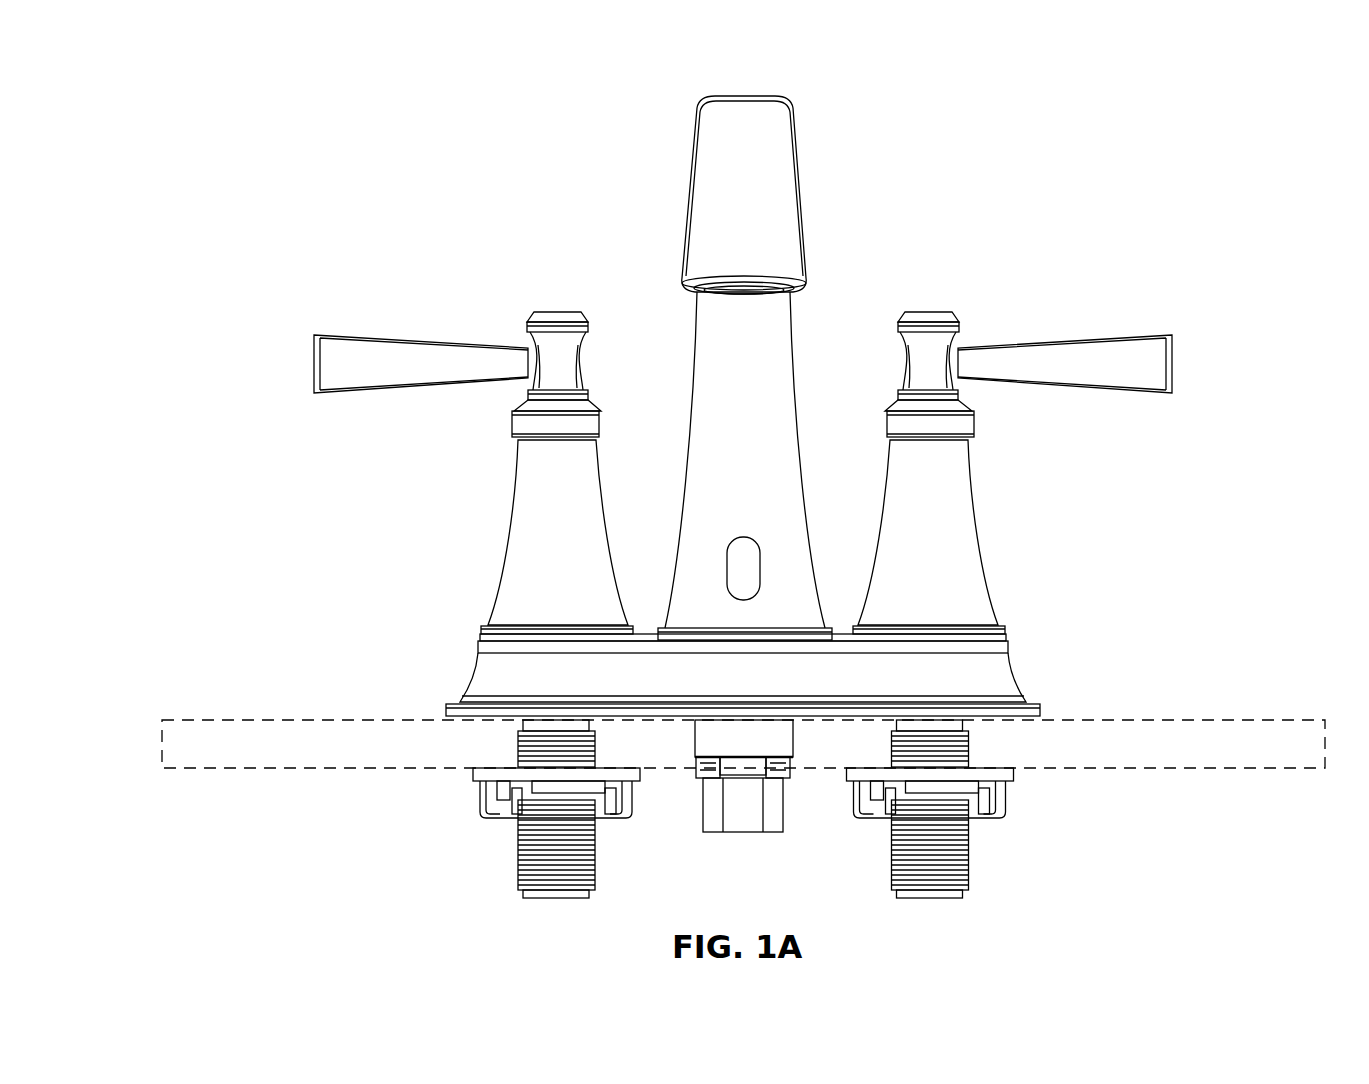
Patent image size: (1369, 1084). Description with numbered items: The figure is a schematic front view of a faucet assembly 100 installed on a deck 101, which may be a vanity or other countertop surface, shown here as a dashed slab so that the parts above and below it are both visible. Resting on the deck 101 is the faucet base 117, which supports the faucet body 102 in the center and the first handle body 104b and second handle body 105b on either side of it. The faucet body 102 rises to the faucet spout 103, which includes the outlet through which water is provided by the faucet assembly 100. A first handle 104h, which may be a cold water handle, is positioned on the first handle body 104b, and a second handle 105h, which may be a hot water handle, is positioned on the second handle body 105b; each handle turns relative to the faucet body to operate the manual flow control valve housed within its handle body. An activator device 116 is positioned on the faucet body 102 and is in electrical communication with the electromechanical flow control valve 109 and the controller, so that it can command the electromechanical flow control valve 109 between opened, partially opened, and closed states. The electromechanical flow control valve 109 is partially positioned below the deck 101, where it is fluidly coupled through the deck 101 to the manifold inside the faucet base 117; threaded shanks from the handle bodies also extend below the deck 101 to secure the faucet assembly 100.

The faucet assembly 100 is at (986, 80).
The deck 101 is at (160, 756).
The faucet body 102 is at (742, 466).
The faucet spout 103 is at (800, 289).
The first handle 104h is at (1100, 337).
The first handle body 104b is at (985, 542).
The second handle 105h is at (358, 337).
The second handle body 105b is at (502, 545).
The electromechanical flow control valve 109 is at (742, 833).
The activator device 116 is at (760, 570).
The faucet base 117 is at (1035, 668).